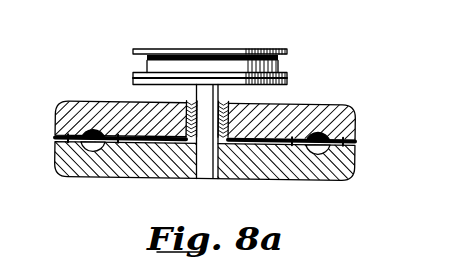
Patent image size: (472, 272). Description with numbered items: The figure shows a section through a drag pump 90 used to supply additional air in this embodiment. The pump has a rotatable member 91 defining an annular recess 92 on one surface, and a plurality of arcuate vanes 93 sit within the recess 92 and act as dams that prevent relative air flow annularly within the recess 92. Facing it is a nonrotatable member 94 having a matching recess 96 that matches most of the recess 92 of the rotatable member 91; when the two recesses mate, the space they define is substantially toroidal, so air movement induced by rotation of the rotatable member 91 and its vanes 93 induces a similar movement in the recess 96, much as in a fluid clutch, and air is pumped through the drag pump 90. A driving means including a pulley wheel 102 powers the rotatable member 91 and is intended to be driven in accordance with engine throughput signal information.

The drag pump 90 is at (66, 80).
The rotatable member 91 is at (350, 180).
The annular recess 92 is at (313, 156).
The arcuate vanes 93 is at (88, 153).
The nonrotatable member 94 is at (354, 118).
The matching recess 96 is at (316, 128).
The pulley wheel 102 is at (233, 50).